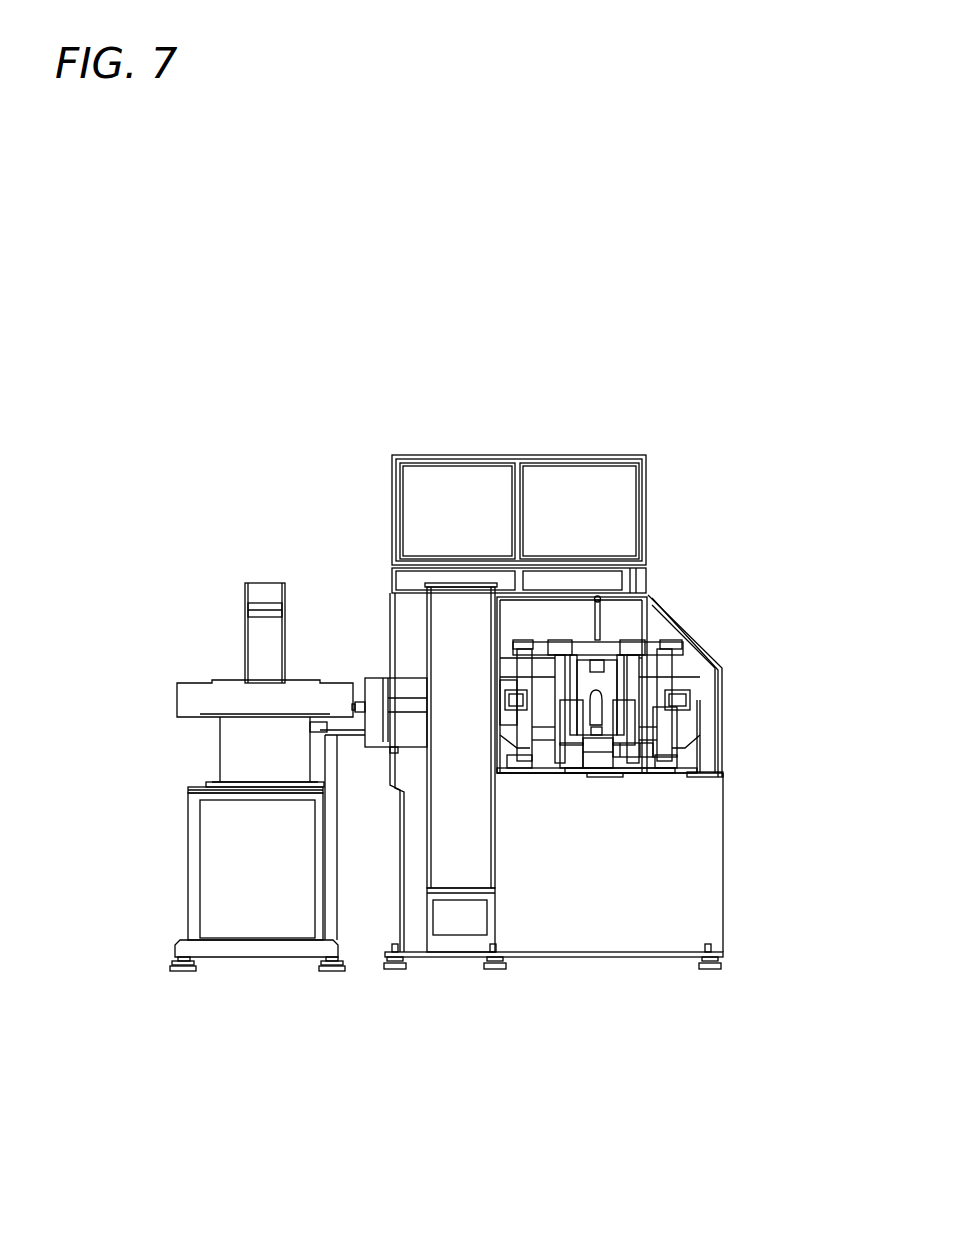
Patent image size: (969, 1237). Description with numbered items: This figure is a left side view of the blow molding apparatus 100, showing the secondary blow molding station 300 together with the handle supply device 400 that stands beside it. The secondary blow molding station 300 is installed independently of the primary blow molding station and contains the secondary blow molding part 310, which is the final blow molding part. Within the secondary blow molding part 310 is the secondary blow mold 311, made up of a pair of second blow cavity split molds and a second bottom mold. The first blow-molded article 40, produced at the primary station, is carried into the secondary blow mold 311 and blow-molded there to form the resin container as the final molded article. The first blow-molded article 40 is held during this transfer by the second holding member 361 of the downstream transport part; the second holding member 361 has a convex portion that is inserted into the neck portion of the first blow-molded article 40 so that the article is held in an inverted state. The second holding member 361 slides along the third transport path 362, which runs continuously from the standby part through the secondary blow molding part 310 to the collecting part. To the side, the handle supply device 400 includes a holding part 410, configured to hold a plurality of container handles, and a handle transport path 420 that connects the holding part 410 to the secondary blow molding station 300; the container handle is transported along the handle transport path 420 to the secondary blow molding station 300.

The blow molding apparatus 100 is at (673, 192).
The secondary blow molding station 300 is at (541, 395).
The secondary blow molding part 310 is at (633, 634).
The secondary blow mold 311 is at (620, 703).
The first blow-molded article 40 is at (597, 700).
The second holding member 361 is at (597, 743).
The third transport path 362 is at (597, 757).
The handle supply device 400 is at (260, 395).
The holding part 410 is at (231, 701).
The handle transport path 420 is at (380, 700).